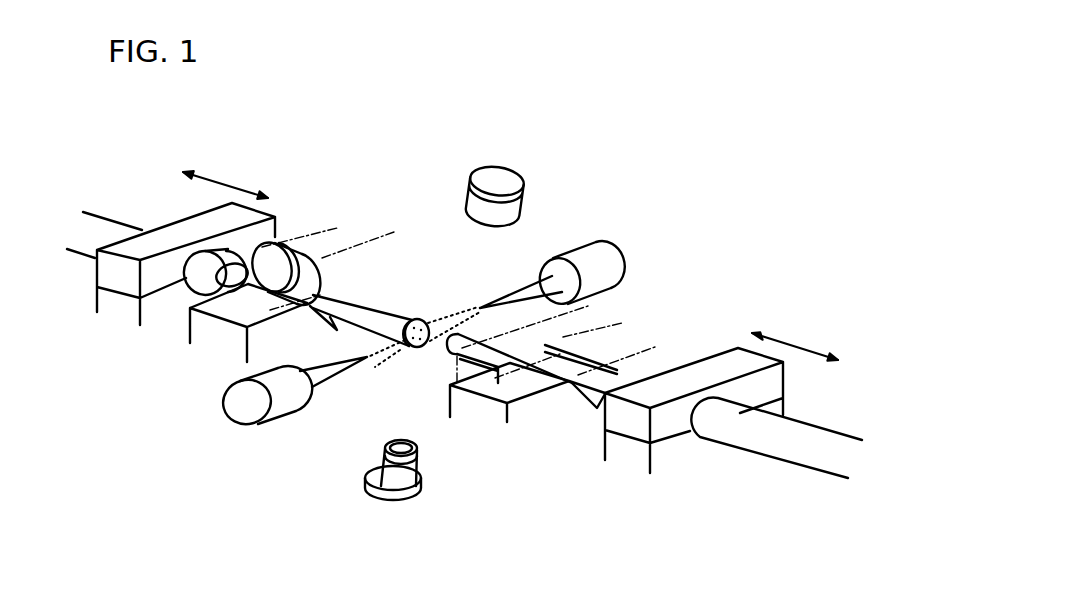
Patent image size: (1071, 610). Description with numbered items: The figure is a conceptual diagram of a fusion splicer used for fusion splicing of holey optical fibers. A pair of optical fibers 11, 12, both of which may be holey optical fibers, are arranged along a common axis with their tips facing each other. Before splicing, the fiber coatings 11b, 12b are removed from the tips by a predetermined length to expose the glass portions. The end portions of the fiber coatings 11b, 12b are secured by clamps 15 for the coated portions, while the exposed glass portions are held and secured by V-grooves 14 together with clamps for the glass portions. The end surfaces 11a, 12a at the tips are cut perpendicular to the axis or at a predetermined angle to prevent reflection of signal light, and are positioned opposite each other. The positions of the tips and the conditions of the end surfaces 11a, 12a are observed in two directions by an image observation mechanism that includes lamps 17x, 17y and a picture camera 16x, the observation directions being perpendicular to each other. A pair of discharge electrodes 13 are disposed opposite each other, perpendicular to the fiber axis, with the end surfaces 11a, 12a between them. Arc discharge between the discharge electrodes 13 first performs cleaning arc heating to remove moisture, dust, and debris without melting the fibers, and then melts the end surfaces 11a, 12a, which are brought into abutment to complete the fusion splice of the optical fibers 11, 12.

The holey optical fiber 11 is at (403, 313).
The end surface 11a is at (416, 348).
The fiber coating 11b is at (193, 287).
The holey optical fiber 12 is at (522, 340).
The end surface 12a is at (452, 343).
The fiber coating 12b is at (715, 432).
The discharge electrode 13 is at (322, 383).
The V-groove 14 is at (217, 338).
The clamp 15 is at (113, 305).
The picture camera 16x is at (392, 500).
The lamp 17x is at (463, 198).
The lamp 17y is at (290, 242).